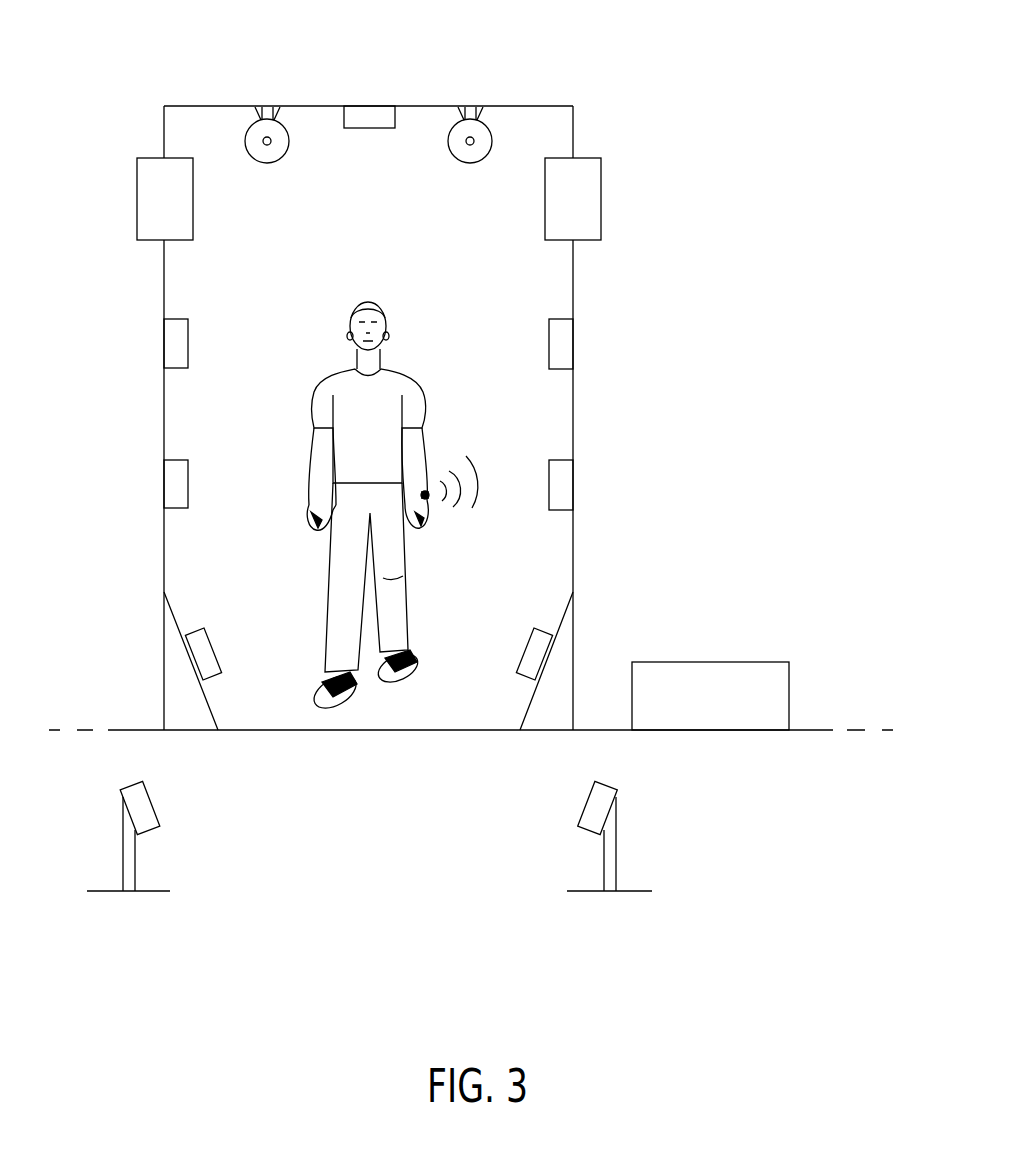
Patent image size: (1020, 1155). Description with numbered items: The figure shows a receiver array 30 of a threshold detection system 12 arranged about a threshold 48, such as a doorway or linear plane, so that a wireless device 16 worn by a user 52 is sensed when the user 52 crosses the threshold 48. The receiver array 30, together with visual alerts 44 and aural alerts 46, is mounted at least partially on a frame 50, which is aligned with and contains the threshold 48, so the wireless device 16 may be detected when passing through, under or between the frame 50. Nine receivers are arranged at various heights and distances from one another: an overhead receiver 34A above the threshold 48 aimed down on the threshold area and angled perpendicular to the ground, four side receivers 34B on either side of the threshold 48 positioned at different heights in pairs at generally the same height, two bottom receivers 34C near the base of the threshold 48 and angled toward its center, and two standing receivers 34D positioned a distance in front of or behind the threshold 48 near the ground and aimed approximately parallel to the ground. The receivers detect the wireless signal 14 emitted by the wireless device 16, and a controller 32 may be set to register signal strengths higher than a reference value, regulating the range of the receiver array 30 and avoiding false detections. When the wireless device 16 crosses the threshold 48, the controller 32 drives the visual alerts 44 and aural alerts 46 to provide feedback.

The threshold detection system 12 is at (213, 38).
The receiver array 30 is at (355, 82).
The frame 50 is at (530, 106).
The visual alerts 44 is at (193, 205).
The aural alerts 46 is at (281, 160).
The overhead receiver 34A is at (366, 128).
The side receivers 34B is at (188, 340).
The bottom receivers 34C is at (215, 650).
The standing receivers 34D is at (136, 787).
The controller 32 is at (745, 662).
The user 52 is at (420, 385).
The wireless device 16 is at (428, 497).
The wireless signal 14 is at (472, 502).
The threshold 48 is at (445, 722).